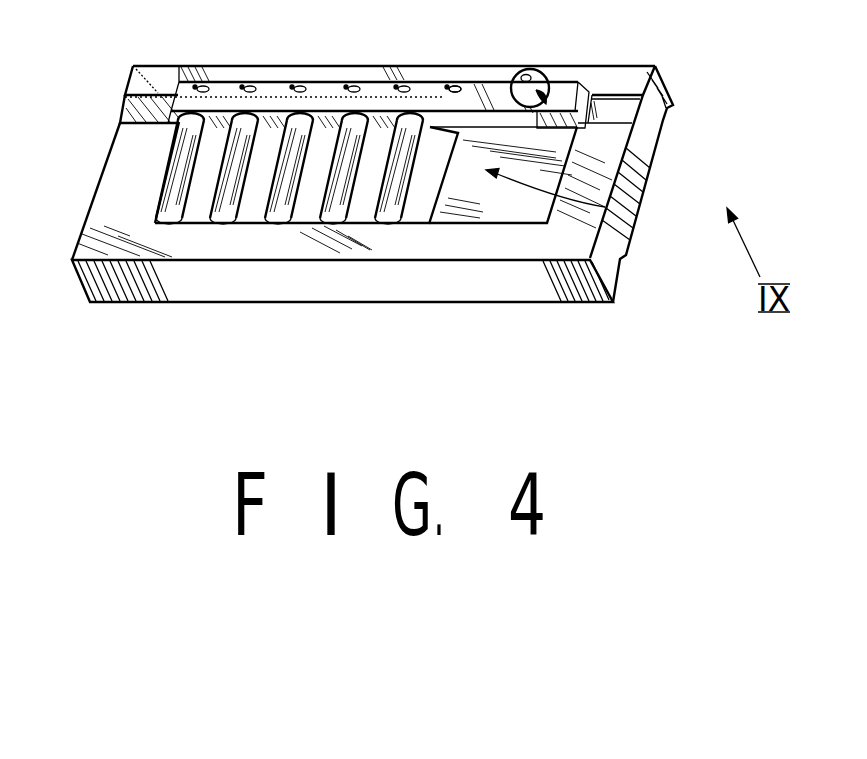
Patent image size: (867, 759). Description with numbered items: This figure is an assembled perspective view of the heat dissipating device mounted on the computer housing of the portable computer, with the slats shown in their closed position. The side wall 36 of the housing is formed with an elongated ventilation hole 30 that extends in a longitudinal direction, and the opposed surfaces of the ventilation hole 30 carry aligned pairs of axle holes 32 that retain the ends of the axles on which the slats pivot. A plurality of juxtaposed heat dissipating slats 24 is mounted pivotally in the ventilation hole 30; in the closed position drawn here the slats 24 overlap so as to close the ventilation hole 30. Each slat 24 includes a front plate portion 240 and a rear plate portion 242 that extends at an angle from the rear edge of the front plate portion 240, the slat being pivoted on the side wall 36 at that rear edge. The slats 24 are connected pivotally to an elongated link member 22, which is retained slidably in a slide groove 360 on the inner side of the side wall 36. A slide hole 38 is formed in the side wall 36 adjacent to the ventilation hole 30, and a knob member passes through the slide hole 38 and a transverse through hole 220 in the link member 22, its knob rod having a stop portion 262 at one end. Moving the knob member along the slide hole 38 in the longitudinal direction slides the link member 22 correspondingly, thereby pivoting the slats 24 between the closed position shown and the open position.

The link member 22 is at (278, 100).
The heat dissipating slats 24 is at (620, 279).
The ventilation hole 30 is at (493, 210).
The axle holes 32 is at (452, 90).
The side wall 36 is at (157, 72).
The slide hole 38 is at (603, 95).
The hole in rail 220 is at (445, 100).
The front plate portion 240 is at (465, 200).
The rear plate portion 242 is at (367, 196).
The stop portion 262 is at (533, 102).
The slide groove 360 is at (118, 115).